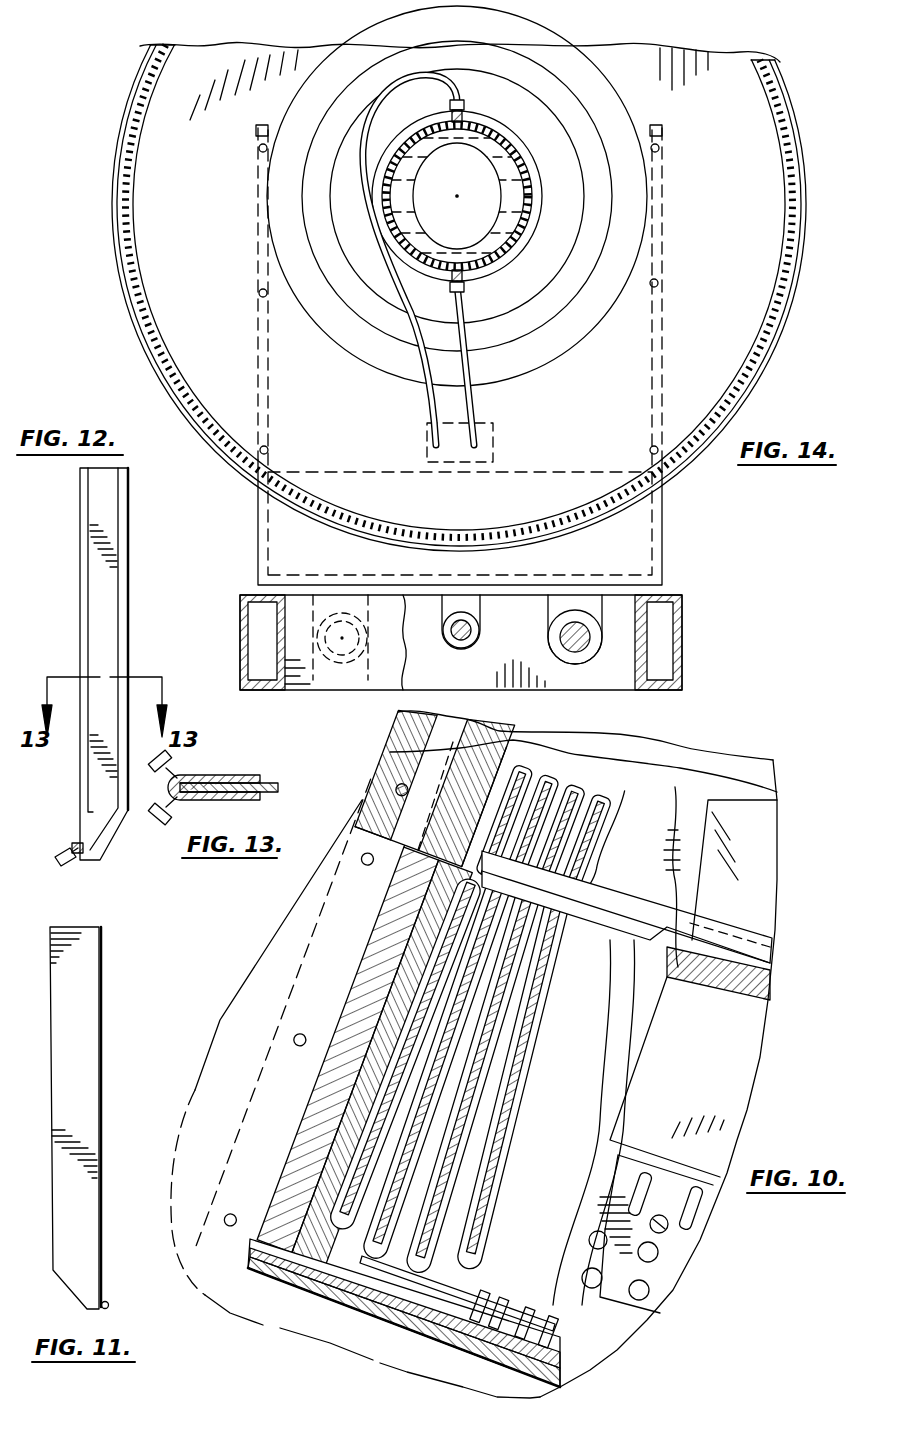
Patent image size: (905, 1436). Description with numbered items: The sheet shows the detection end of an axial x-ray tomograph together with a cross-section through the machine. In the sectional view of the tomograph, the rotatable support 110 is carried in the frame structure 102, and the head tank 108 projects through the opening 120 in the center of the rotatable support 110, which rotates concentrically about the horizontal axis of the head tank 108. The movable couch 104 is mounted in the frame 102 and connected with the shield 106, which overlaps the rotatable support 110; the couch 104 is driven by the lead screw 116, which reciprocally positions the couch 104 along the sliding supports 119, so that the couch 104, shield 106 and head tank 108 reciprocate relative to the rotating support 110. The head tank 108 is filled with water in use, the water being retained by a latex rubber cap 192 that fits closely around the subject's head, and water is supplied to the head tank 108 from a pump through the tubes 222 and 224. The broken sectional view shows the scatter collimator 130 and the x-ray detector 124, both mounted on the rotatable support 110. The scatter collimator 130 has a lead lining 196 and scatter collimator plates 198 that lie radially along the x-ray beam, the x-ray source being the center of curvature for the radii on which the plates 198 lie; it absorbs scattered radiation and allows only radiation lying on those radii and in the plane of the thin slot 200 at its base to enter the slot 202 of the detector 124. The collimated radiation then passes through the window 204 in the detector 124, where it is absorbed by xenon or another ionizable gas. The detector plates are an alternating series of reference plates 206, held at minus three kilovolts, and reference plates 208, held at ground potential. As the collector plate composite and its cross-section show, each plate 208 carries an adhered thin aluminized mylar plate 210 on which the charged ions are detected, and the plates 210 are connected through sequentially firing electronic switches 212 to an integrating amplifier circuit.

In FIG. 14, the frame structure 102 is at (684, 644).
In FIG. 14, the movable couch 104 is at (258, 503).
In FIG. 14, the shield 106 is at (768, 255).
In FIG. 14, the head tank 108 is at (530, 223).
In FIG. 14, the rotatable support 110 is at (770, 348).
In FIG. 14, the lead screw 116 is at (452, 642).
In FIG. 14, the sliding supports 119 is at (352, 656).
In FIG. 14, the opening 120 is at (532, 110).
In FIG. 14, the latex rubber cap 192 is at (487, 192).
In FIG. 14, the tube 222 is at (418, 372).
In FIG. 14, the tube 224 is at (478, 380).
In FIG. 10, the x-ray detector 124 is at (760, 1060).
In FIG. 10, the scatter collimator 130 is at (783, 855).
In FIG. 10, the lead lining 196 is at (757, 825).
In FIG. 10, the scatter collimator plates 198 is at (590, 786).
In FIG. 10, the thin slot 200 is at (600, 908).
In FIG. 10, the slot 202 is at (473, 882).
In FIG. 10, the window 204 is at (655, 987).
In FIG. 11, the reference plates 206 is at (92, 1022).
In FIG. 10, the reference plates 206 is at (366, 1190).
In FIG. 12, the reference plates 208 is at (128, 600).
In FIG. 13, the reference plates 208 is at (278, 787).
In FIG. 10, the reference plates 208 is at (413, 1250).
In FIG. 12, the mylar plate 210 is at (95, 585).
In FIG. 13, the mylar plate 210 is at (233, 775).
In FIG. 10, the electronic switches 212 is at (658, 1253).